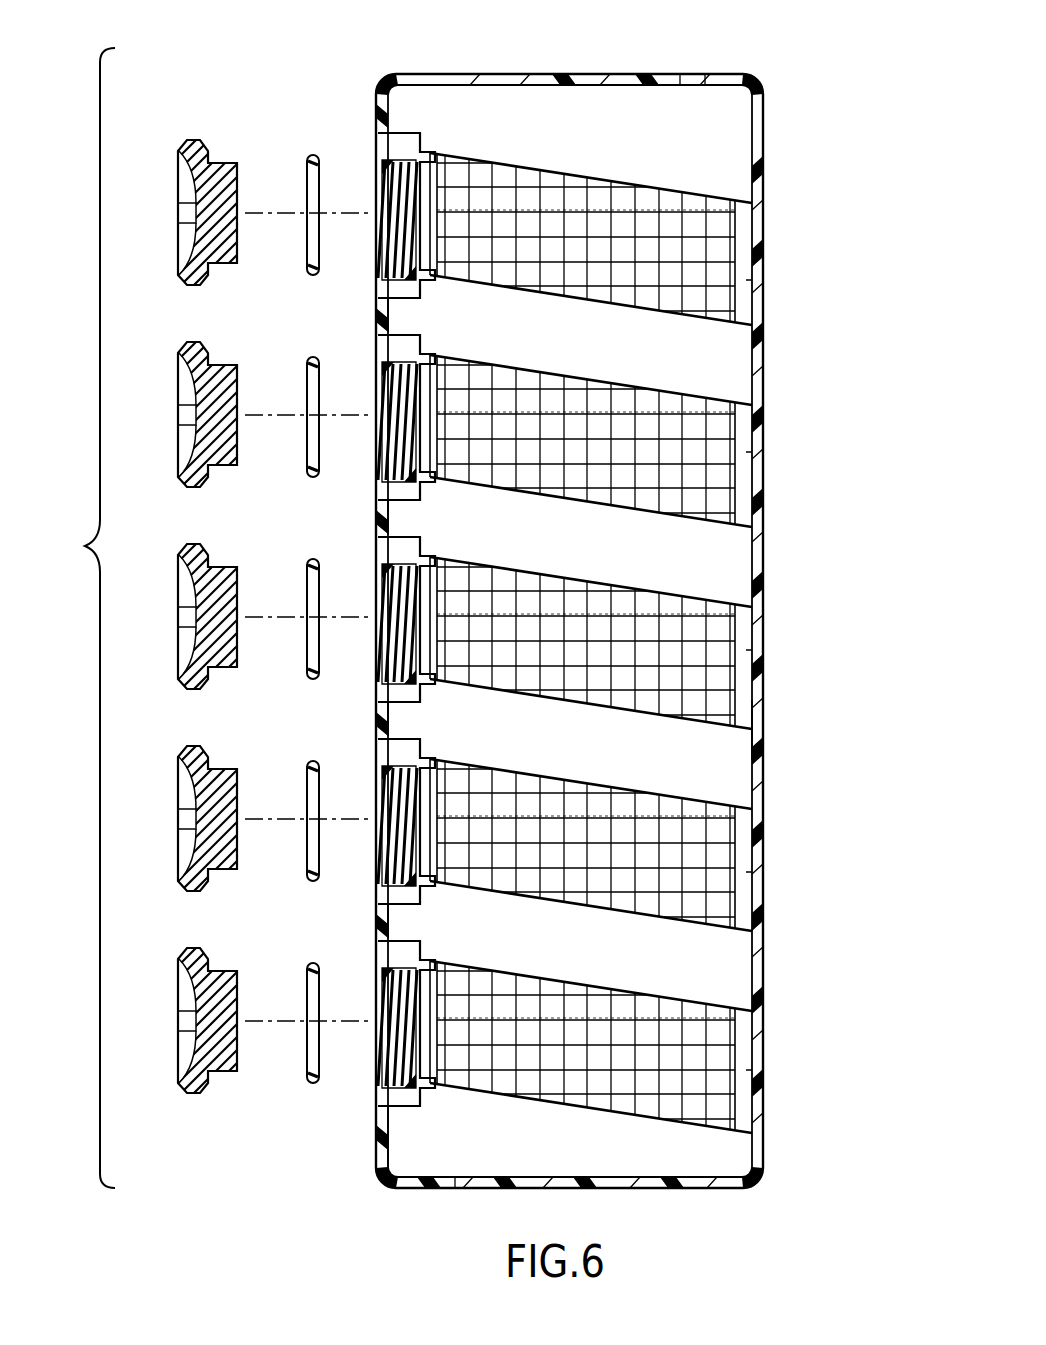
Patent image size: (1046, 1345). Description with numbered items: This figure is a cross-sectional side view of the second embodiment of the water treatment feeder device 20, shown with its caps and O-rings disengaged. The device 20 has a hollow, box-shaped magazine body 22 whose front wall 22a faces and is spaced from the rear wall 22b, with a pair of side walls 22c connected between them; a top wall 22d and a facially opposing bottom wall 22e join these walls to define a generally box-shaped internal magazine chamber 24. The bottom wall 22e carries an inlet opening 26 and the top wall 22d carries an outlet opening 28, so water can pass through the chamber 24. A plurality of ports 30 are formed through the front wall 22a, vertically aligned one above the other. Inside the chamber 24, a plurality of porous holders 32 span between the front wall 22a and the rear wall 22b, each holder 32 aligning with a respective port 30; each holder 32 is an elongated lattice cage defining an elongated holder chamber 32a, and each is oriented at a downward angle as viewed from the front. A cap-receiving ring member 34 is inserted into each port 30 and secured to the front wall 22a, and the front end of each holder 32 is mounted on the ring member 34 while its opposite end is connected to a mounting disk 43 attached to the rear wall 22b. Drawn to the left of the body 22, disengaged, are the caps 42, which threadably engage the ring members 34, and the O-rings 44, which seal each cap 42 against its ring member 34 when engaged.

The water treatment feeder device 20 is at (81, 618).
The magazine body 22 is at (763, 146).
The front wall 22a is at (378, 518).
The rear wall 22b is at (762, 355).
The side walls 22c is at (725, 764).
The top wall 22d is at (535, 74).
The bottom wall 22e is at (605, 1190).
The internal magazine chamber 24 is at (530, 554).
The inlet opening 26 is at (468, 1190).
The outlet opening 28 is at (690, 74).
The ports 30 is at (376, 130).
The porous holders 32 is at (588, 177).
The holder chamber 32a is at (650, 218).
The cap-receiving ring members 34 is at (375, 160).
The caps 42 is at (175, 147).
The mounting disk 43 is at (746, 280).
The O-ring 44 is at (306, 167).